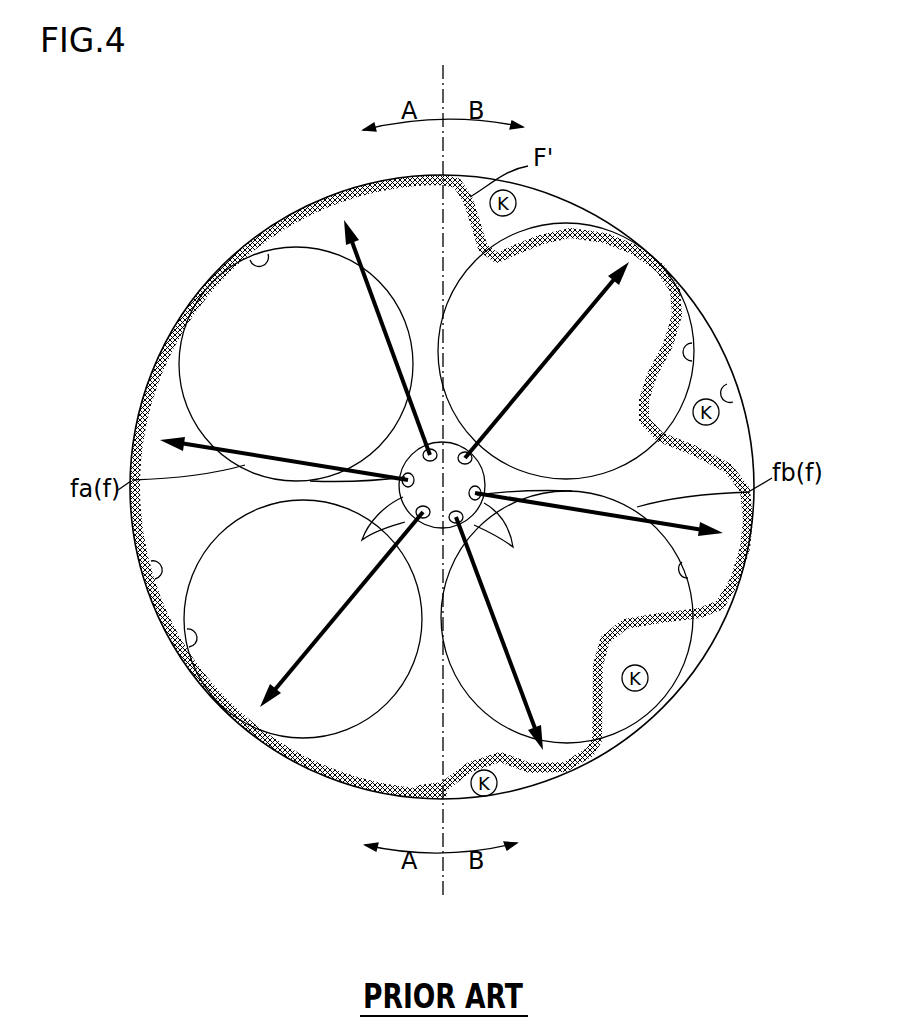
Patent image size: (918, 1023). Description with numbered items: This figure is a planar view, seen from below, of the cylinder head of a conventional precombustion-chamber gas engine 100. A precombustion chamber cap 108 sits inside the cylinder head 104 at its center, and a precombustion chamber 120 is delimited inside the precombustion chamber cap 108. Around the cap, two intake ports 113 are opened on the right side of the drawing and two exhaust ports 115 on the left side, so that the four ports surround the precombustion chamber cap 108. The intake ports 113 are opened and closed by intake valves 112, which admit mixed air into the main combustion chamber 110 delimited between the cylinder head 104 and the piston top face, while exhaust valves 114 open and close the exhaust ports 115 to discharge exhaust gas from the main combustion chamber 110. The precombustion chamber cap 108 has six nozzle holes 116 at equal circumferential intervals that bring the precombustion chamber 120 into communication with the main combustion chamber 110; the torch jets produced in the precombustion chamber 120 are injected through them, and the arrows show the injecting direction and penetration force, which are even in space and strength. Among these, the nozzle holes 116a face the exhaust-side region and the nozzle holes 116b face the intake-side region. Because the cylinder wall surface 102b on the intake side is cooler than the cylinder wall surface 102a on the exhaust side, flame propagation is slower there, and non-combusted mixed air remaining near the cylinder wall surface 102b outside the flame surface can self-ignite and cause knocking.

The precombustion-chamber gas engine 100 is at (236, 150).
The cylinder wall surface 102a is at (150, 582).
The cylinder wall surface 102b is at (731, 396).
The cylinder head 104 is at (757, 519).
The precombustion chamber cap 108 is at (441, 444).
The main combustion chamber 110 is at (417, 243).
The intake valves 112 is at (637, 325).
The intake ports 113 is at (690, 352).
The exhaust valves 114 is at (220, 333).
The exhaust ports 115 is at (253, 257).
The nozzle holes 116 is at (441, 523).
The nozzle holes 116a is at (362, 541).
The nozzle holes 116b is at (513, 548).
The precombustion chamber 120 is at (441, 486).